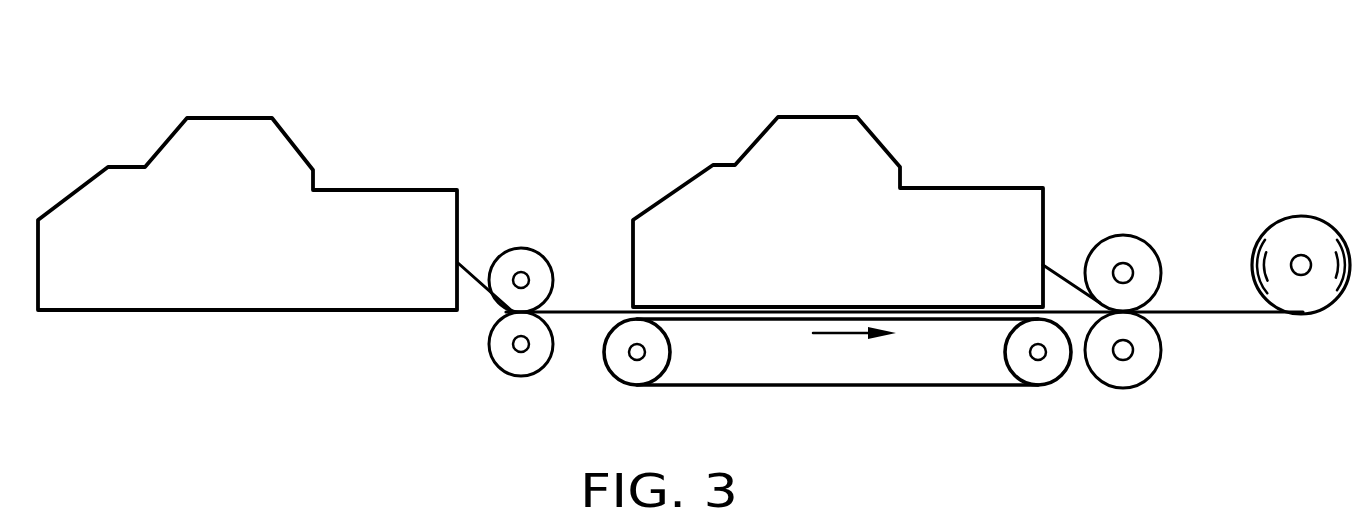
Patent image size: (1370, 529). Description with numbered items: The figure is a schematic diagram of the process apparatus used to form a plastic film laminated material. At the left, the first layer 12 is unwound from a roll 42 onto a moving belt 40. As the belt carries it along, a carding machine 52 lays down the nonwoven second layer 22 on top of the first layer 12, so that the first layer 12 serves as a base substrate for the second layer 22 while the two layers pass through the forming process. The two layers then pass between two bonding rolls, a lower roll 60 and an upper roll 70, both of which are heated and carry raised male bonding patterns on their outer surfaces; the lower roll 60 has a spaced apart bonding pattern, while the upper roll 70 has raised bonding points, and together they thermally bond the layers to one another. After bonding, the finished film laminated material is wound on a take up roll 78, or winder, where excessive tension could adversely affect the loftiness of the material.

The first layer 12 is at (595, 310).
The second layer 22 is at (1057, 268).
The moving belt 40 is at (770, 388).
The roll 42 is at (232, 118).
The carding machine 52 is at (815, 117).
The lower bonding roll 60 is at (1115, 387).
The upper bonding roll 70 is at (1148, 247).
The take up roll 78 is at (1297, 217).